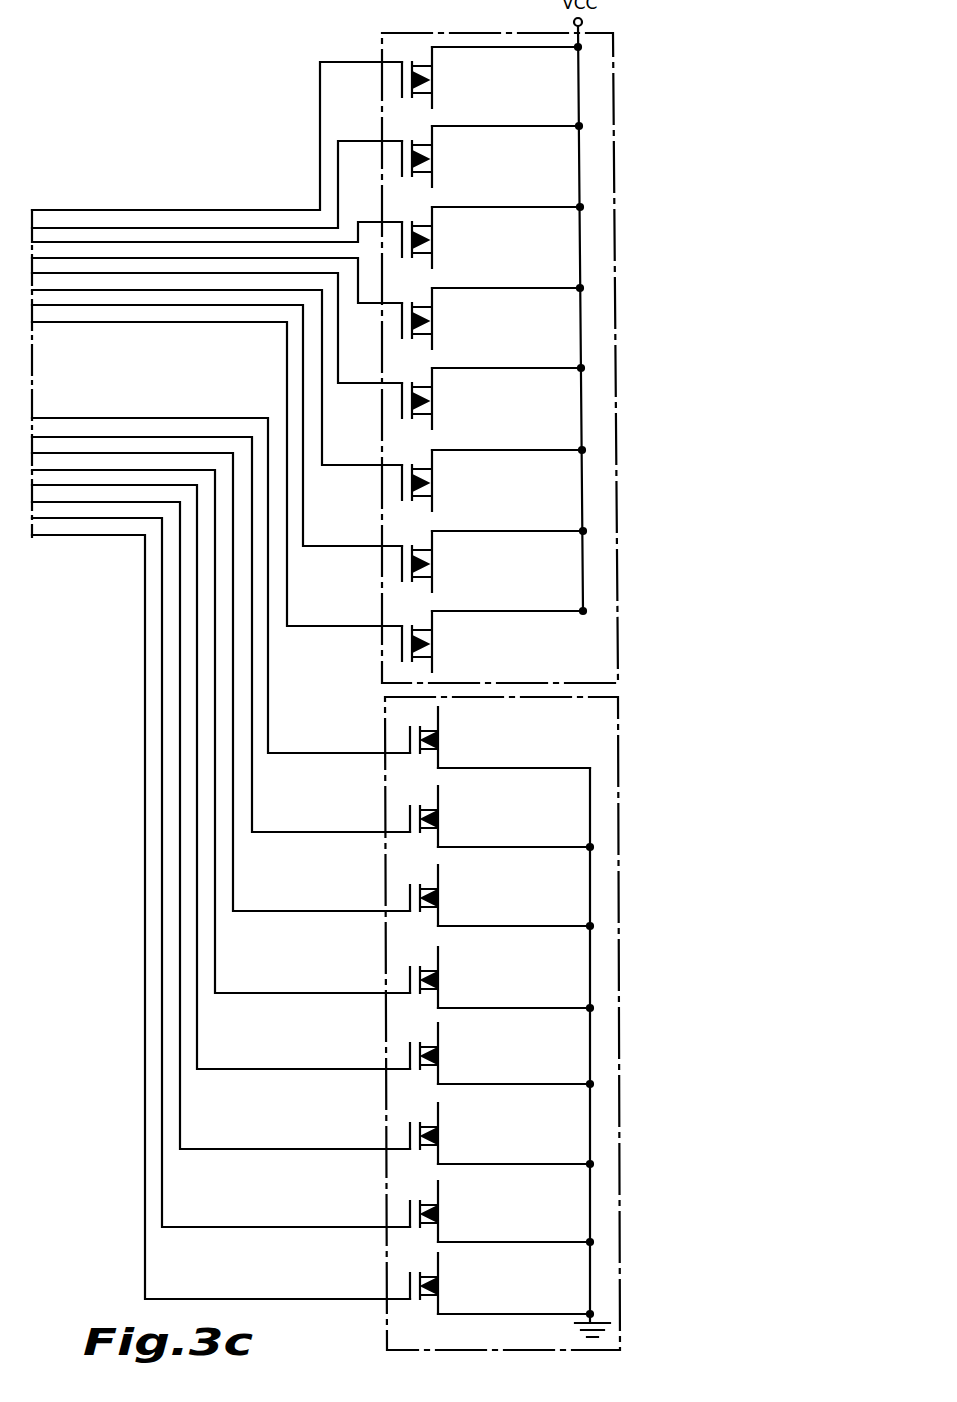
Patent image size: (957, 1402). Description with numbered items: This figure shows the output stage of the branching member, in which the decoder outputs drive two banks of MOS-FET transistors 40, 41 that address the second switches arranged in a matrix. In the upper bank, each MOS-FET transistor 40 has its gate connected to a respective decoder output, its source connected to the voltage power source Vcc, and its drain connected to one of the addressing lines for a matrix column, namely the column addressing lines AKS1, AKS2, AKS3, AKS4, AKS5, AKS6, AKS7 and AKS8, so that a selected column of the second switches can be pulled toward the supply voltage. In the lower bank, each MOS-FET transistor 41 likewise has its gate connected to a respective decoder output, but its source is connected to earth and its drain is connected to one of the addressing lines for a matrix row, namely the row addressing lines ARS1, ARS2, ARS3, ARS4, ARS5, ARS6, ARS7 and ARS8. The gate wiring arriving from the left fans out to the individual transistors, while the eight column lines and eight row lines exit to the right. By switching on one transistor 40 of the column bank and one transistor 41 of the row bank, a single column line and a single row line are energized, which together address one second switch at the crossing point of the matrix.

The MOS-FET transistor 40 is at (613, 58).
The MOS-FET transistor 41 is at (620, 1328).
The matrix column addressing line AKS1 is at (432, 108).
The matrix column addressing line AKS2 is at (432, 187).
The matrix column addressing line AKS3 is at (432, 268).
The matrix column addressing line AKS4 is at (432, 349).
The matrix column addressing line AKS5 is at (432, 429).
The matrix column addressing line AKS6 is at (432, 511).
The matrix column addressing line AKS7 is at (432, 592).
The matrix column addressing line AKS8 is at (432, 672).
The matrix row addressing line ARS1 is at (438, 707).
The matrix row addressing line ARS2 is at (438, 786).
The matrix row addressing line ARS3 is at (438, 865).
The matrix row addressing line ARS4 is at (438, 947).
The matrix row addressing line ARS5 is at (438, 1023).
The matrix row addressing line ARS6 is at (438, 1103).
The matrix row addressing line ARS7 is at (438, 1181).
The matrix row addressing line ARS8 is at (438, 1253).